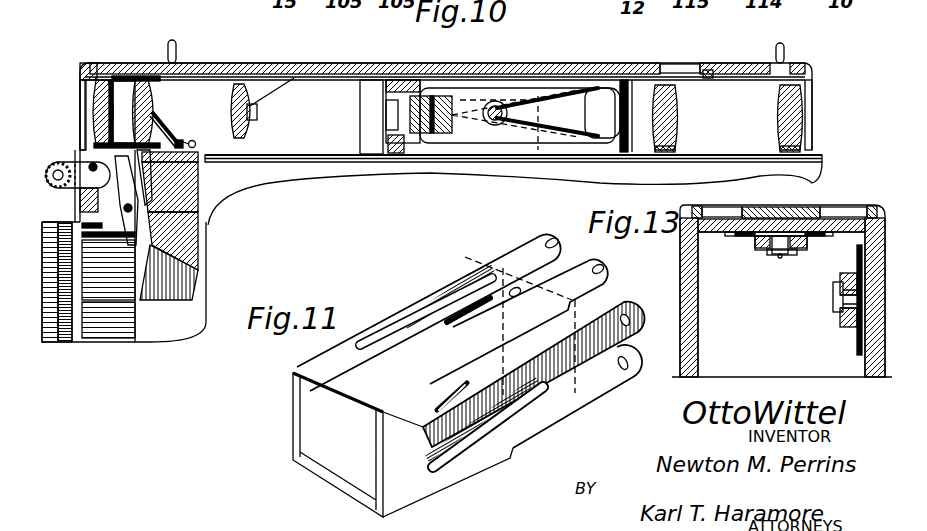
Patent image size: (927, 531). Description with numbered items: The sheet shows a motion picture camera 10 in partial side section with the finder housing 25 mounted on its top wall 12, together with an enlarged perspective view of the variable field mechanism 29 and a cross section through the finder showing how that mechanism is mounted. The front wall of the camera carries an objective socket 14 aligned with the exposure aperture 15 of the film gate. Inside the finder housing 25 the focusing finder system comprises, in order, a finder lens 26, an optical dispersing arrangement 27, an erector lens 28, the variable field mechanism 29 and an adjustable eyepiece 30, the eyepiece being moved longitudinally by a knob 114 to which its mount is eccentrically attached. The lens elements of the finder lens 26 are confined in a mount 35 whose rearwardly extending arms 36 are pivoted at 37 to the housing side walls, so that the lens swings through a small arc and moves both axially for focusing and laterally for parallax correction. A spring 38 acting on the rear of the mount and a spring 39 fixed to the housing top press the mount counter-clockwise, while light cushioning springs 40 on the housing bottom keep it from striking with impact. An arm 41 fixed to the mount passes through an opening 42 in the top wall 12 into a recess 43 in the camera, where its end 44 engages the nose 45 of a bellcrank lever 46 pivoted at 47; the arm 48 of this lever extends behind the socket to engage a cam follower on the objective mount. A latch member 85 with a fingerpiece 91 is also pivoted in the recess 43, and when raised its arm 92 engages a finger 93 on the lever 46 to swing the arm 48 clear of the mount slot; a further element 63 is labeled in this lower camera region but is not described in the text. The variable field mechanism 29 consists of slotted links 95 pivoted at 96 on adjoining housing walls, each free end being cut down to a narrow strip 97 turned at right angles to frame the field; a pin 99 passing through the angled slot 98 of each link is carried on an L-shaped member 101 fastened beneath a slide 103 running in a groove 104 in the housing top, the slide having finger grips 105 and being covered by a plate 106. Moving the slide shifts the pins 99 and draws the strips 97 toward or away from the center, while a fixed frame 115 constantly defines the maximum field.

In FIG. 10, the motion picture camera 10 is at (296, 177).
In FIG. 10, the top wall 12 is at (375, 164).
In FIG. 13, the top wall 12 is at (752, 377).
In FIG. 10, the objective socket 14 is at (70, 342).
In FIG. 10, the exposure aperture 15 is at (190, 282).
In FIG. 10, the finder housing 25 is at (812, 72).
In FIG. 13, the finder housing 25 is at (690, 283).
In FIG. 10, the finder lens 26 is at (95, 95).
In FIG. 10, the optical dispersing arrangement 27 is at (248, 124).
In FIG. 10, the erector lens 28 is at (372, 100).
In FIG. 10, the variable field mechanism 29 is at (583, 108).
In FIG. 10, the adjustable eyepiece 30 is at (780, 108).
In FIG. 10, the mount 35 is at (98, 76).
In FIG. 10, the rearwardly extending arms 36 is at (182, 138).
In FIG. 10, the pivot 37 is at (194, 141).
In FIG. 10, the spring 38 is at (162, 118).
In FIG. 10, the spring 39 is at (133, 77).
In FIG. 10, the light cushioning springs 40 is at (93, 128).
In FIG. 10, the arm 41 is at (198, 178).
In FIG. 10, the opening 42 is at (95, 146).
In FIG. 10, the recess 43 is at (190, 200).
In FIG. 10, the end 44 is at (180, 236).
In FIG. 10, the nose 45 is at (185, 216).
In FIG. 10, the lever 46 is at (190, 262).
In FIG. 10, the pivot 47 is at (166, 300).
In FIG. 10, the arm 48 is at (130, 330).
In FIG. 10, the striped member 63 is at (120, 300).
In FIG. 10, the latch member 85 is at (80, 168).
In FIG. 10, the fingerpiece 91 is at (71, 209).
In FIG. 10, the arm 92 is at (133, 112).
In FIG. 10, the finger 93 is at (112, 237).
In FIG. 10, the slotted links 95 is at (482, 140).
In FIG. 11, the slotted links 95 is at (386, 322).
In FIG. 13, the slotted links 95 is at (757, 247).
In FIG. 10, the pivot 96 is at (432, 78).
In FIG. 11, the pivot 96 is at (553, 238).
In FIG. 11, the narrow strip 97 is at (330, 405).
In FIG. 10, the slot 98 is at (560, 95).
In FIG. 11, the slot 98 is at (405, 360).
In FIG. 10, the pin 99 is at (497, 125).
In FIG. 11, the pin 99 is at (465, 292).
In FIG. 13, the pin 99 is at (835, 293).
In FIG. 11, the L-shaped member 101 is at (512, 462).
In FIG. 13, the L-shaped member 101 is at (727, 236).
In FIG. 10, the slide 103 is at (330, 70).
In FIG. 13, the slide 103 is at (795, 207).
In FIG. 10, the groove 104 is at (662, 66).
In FIG. 13, the groove 104 is at (740, 207).
In FIG. 13, the finger grips 105 is at (695, 207).
In FIG. 10, the plate 106 is at (218, 64).
In FIG. 13, the plate 106 is at (795, 207).
In FIG. 10, the knob 114 is at (728, 66).
In FIG. 10, the fixed frame 115 is at (708, 70).